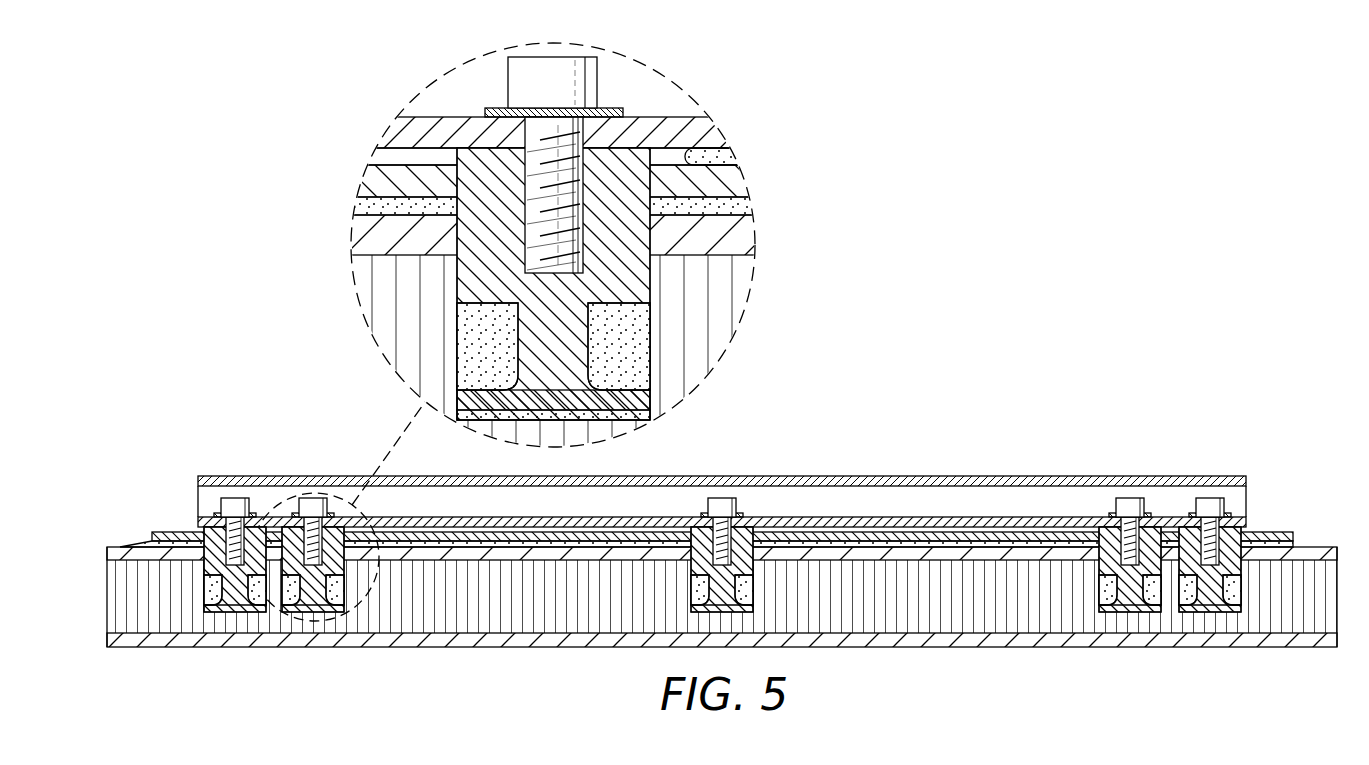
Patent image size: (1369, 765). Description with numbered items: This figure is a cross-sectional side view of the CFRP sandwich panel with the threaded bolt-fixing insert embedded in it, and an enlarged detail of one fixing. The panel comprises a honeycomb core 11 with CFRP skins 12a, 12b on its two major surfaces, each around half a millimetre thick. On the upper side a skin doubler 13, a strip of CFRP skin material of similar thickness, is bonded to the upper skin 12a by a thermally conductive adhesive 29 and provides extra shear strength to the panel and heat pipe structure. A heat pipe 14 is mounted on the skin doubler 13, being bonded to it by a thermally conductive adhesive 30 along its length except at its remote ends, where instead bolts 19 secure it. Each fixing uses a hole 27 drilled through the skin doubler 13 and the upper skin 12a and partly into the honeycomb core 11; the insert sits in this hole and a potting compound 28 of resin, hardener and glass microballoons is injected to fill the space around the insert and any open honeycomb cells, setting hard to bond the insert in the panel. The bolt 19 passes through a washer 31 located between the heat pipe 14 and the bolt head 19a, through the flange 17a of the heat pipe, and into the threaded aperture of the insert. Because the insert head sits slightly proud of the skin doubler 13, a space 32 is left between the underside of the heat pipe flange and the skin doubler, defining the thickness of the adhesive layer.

The honeycomb core 11 is at (1042, 618).
The upper skin 12a is at (750, 238).
The lower skin 12b is at (915, 636).
The skin doubler 13 is at (366, 180).
The heat pipe 14 is at (1190, 470).
The flange of the heat pipe 17a is at (714, 131).
The bolt 19 is at (572, 50).
The bolt head 19a is at (508, 83).
The hole 27 is at (650, 348).
The potting compound 28 is at (470, 345).
The thermally conductive adhesive 29 is at (748, 206).
The thermally conductive adhesive 30 is at (732, 157).
The washer 31 is at (626, 110).
The space 32 is at (378, 155).